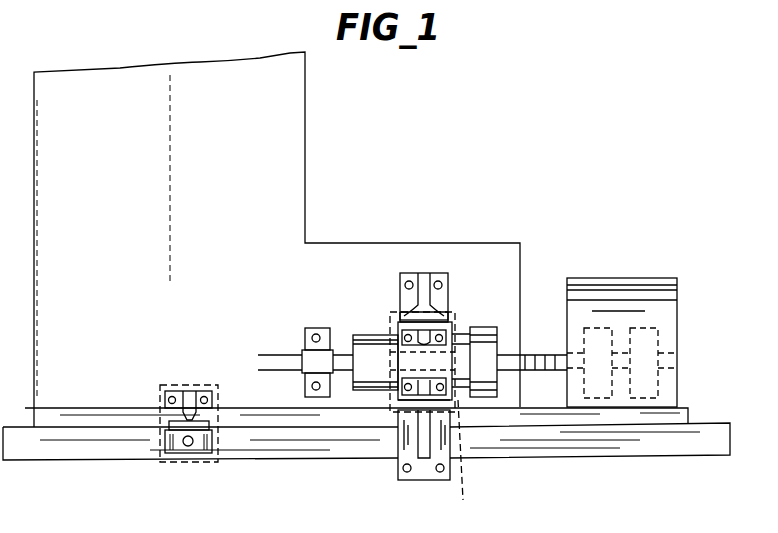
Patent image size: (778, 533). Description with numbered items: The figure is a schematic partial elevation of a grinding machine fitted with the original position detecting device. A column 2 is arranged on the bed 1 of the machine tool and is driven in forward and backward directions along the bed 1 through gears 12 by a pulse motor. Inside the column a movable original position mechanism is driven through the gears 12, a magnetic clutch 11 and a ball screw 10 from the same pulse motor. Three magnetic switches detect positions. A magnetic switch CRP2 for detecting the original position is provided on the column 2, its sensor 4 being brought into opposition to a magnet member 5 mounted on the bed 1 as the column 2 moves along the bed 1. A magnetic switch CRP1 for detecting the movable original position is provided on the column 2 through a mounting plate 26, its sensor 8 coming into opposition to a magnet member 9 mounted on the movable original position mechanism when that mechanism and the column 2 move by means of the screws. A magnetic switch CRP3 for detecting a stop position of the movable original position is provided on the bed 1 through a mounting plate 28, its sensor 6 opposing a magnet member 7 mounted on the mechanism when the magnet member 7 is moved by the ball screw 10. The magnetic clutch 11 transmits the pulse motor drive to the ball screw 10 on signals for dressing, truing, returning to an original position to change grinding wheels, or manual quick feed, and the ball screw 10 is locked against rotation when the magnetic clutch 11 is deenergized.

The bed 1 is at (665, 448).
The column 2 is at (283, 157).
The sensor 4 is at (172, 389).
The magnet member 5 is at (160, 460).
The sensor 6 is at (393, 390).
The magnet member 7 is at (455, 395).
The sensor 8 is at (437, 320).
The magnet member 9 is at (455, 318).
The ball screw 10 is at (537, 347).
The magnetic clutch 11 is at (598, 327).
The gears 12 is at (653, 327).
The mounting plate 26 is at (415, 272).
The mounting plate 28 is at (405, 437).
The magnetic switch CRP1 is at (388, 325).
The magnetic switch CRP2 is at (197, 385).
The magnetic switch CRP3 is at (499, 466).